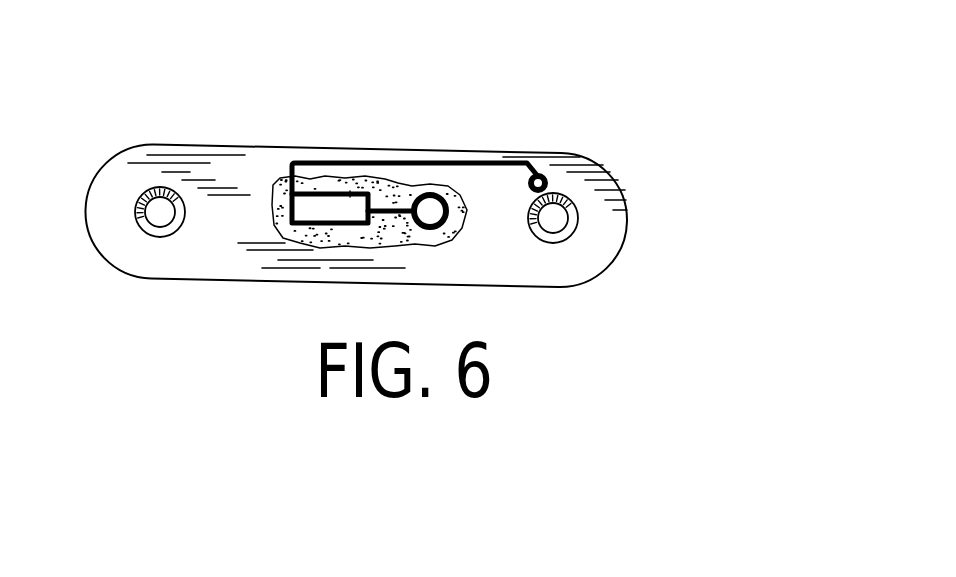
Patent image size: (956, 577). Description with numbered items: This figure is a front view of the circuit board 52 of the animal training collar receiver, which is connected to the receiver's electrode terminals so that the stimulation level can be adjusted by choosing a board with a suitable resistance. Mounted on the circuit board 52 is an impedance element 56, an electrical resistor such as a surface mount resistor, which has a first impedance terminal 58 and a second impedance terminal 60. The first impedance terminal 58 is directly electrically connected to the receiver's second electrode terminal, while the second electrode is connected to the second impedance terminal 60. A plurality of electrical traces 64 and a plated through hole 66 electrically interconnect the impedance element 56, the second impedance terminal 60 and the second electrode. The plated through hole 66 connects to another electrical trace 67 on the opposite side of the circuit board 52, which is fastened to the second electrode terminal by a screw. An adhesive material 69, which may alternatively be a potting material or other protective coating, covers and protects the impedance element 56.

The circuit board 52 is at (662, 180).
The impedance element 56 is at (315, 208).
The first impedance terminal 58 is at (288, 204).
The second impedance terminal 60 is at (366, 191).
The electrical traces 64 is at (320, 176).
The plated through hole 66 is at (541, 176).
The electrical trace 67 is at (555, 193).
The adhesive material 69 is at (447, 231).